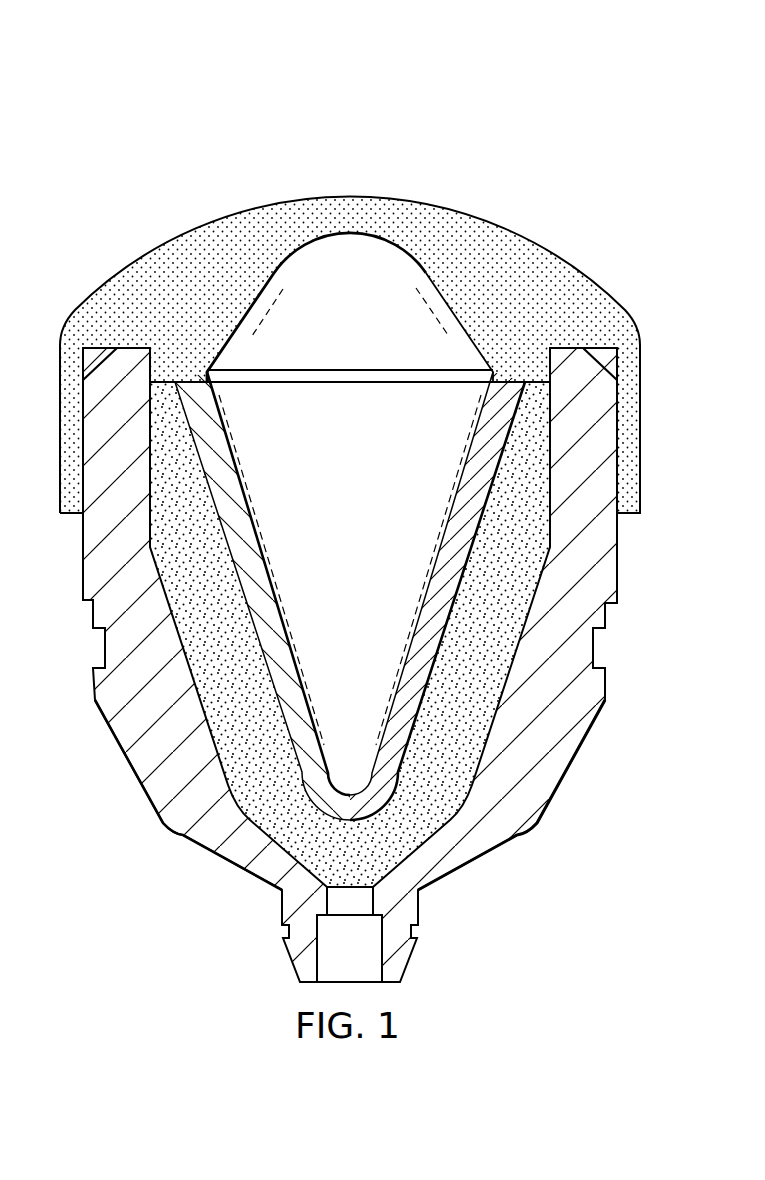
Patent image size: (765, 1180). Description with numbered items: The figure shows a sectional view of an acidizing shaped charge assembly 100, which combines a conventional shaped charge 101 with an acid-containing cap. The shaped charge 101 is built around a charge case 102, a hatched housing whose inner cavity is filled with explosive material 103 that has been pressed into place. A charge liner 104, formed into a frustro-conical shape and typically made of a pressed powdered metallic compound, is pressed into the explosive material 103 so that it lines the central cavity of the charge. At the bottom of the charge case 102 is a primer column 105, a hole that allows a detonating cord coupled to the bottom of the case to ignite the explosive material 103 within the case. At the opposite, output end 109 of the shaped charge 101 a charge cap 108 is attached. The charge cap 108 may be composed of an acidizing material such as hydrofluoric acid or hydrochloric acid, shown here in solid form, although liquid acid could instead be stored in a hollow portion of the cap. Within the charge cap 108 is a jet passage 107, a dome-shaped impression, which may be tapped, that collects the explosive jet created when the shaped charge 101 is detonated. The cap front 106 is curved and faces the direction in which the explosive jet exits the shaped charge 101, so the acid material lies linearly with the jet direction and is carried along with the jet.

The acidizing shaped charge assembly 100 is at (203, 78).
The shaped charge 101 is at (617, 577).
The charge case 102 is at (567, 767).
The explosive material 103 is at (205, 522).
The charge liner 104 is at (242, 622).
The primer column 105 is at (363, 896).
The cap front 106 is at (240, 212).
The jet passage 107 is at (372, 317).
The charge cap 108 is at (458, 218).
The output end 109 is at (192, 381).